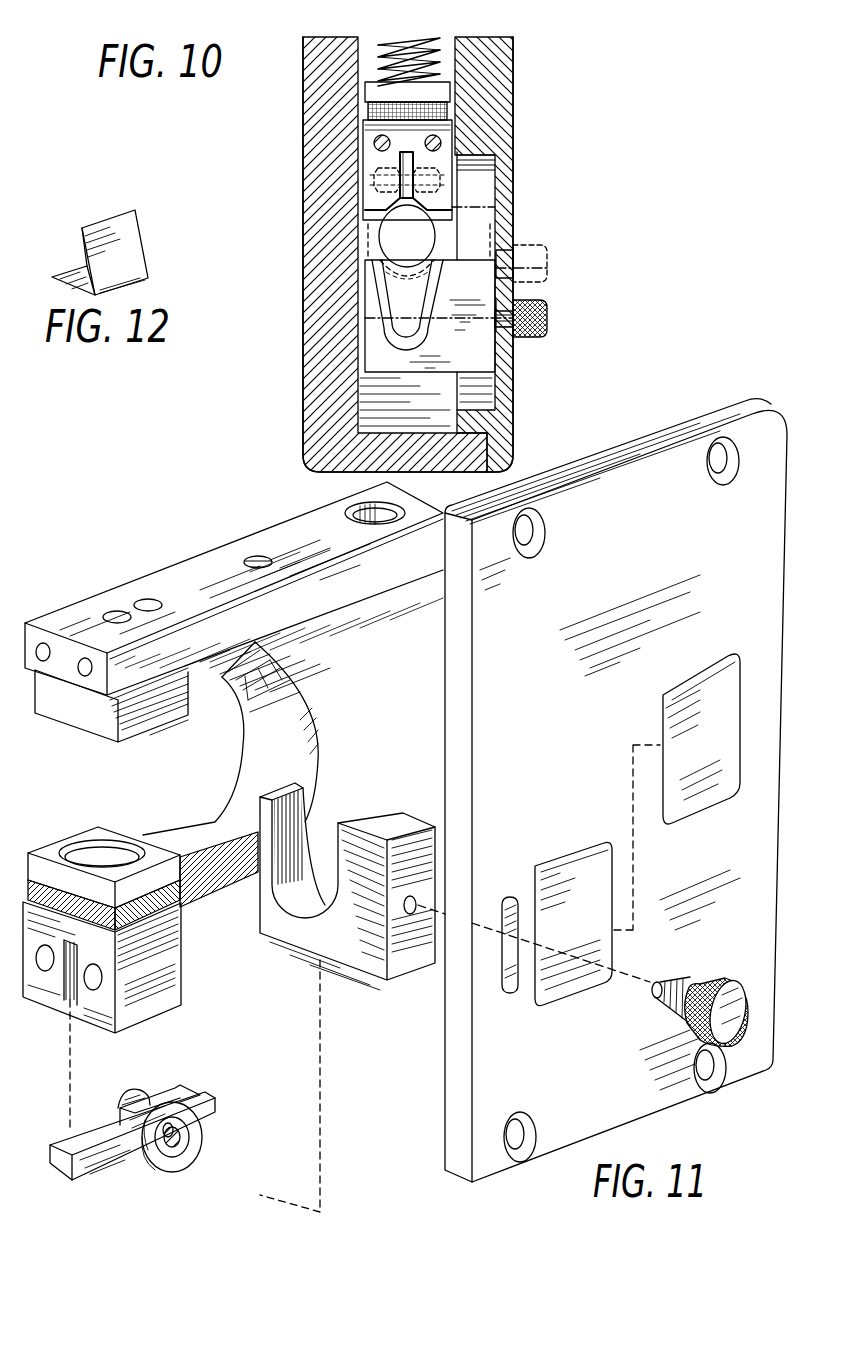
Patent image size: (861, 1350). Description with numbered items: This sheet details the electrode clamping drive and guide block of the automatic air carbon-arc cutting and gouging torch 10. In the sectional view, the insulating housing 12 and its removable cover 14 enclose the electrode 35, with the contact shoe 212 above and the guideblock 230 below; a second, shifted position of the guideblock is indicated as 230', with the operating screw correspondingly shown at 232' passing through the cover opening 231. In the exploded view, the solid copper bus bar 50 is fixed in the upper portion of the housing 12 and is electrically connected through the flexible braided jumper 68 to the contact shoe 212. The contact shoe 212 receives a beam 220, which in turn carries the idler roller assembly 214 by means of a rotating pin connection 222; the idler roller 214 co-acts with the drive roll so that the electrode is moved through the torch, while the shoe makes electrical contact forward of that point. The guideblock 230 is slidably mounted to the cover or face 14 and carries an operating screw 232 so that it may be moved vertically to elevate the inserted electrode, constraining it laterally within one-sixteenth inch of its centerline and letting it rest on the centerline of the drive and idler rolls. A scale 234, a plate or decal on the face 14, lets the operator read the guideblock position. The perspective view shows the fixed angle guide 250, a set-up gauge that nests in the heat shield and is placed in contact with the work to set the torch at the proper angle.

In FIG. 10, the automatic Air Carbon-Arc Cutting and Gouging Torch 10 is at (527, 30).
In FIG. 10, the housing 12 is at (312, 106).
In FIG. 10, the removable cover 14 is at (498, 73).
In FIG. 11, the removable cover 14 is at (648, 592).
In FIG. 10, the electrode 35 is at (419, 250).
In FIG. 11, the bus bar 50 is at (297, 520).
In FIG. 11, the flexible braided jumper 68 is at (248, 752).
In FIG. 10, the contact shoe 212 is at (372, 134).
In FIG. 11, the contact shoe 212 is at (176, 996).
In FIG. 10, the idler roller assembly 214 is at (405, 162).
In FIG. 11, the idler roller assembly 214 is at (137, 1085).
In FIG. 10, the beam 220 is at (410, 158).
In FIG. 11, the beam 220 is at (128, 1153).
In FIG. 11, the rotating pin connection 222 is at (200, 1140).
In FIG. 10, the guideblock 230 is at (365, 316).
In FIG. 11, the guideblock 230 is at (347, 997).
In FIG. 10, the support block (raised position) 230' is at (369, 241).
In FIG. 10, the slot 231 is at (502, 291).
In FIG. 11, the slot 231 is at (522, 960).
In FIG. 10, the operating screw 232 is at (482, 328).
In FIG. 11, the operating screw 232 is at (585, 976).
In FIG. 10, the thumbscrew (alternate position) 232' is at (554, 249).
In FIG. 11, the scale 234 is at (712, 680).
In FIG. 12, the fixed angle guide 250 is at (130, 247).